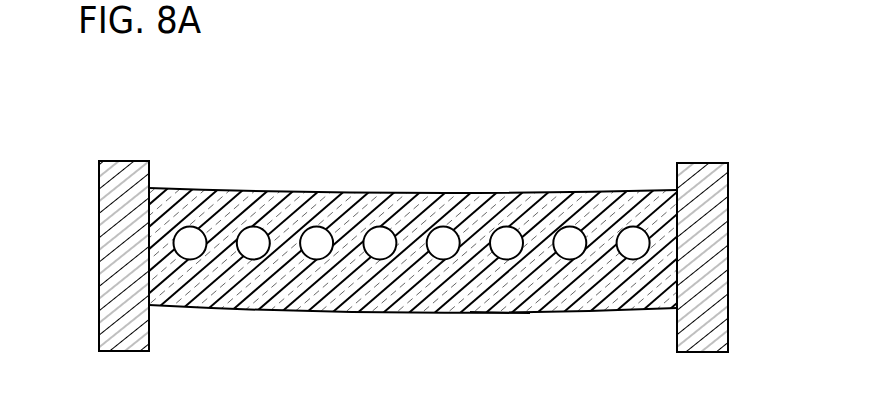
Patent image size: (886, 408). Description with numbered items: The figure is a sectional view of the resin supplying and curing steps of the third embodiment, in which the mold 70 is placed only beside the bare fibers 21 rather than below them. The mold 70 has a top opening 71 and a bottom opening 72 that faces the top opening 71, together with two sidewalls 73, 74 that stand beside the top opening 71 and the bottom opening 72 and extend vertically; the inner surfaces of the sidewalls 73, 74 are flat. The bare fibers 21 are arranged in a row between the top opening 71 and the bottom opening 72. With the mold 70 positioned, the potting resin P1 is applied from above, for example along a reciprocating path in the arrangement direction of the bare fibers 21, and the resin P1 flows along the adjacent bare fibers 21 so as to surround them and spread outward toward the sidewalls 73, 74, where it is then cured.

The mold 70 is at (86, 180).
The top opening 71 is at (287, 177).
The bottom opening 72 is at (288, 325).
The sidewall 73 is at (149, 257).
The sidewall 74 is at (677, 255).
The bare fibers 21 is at (633, 232).
The potting resin P1 is at (498, 313).